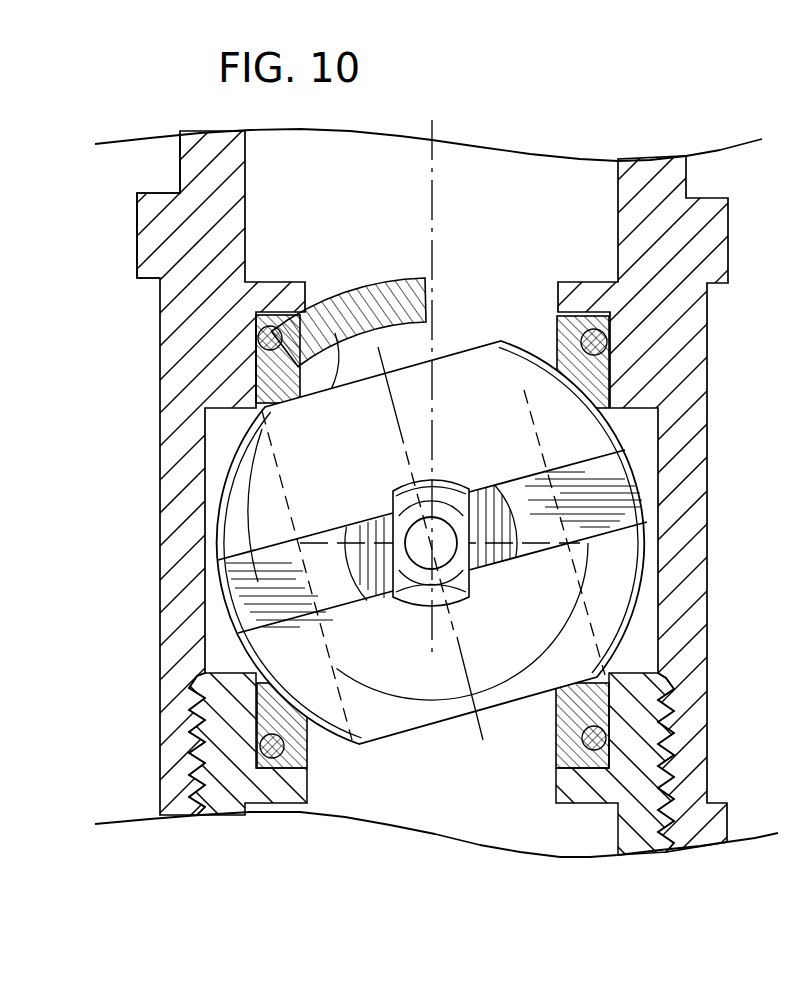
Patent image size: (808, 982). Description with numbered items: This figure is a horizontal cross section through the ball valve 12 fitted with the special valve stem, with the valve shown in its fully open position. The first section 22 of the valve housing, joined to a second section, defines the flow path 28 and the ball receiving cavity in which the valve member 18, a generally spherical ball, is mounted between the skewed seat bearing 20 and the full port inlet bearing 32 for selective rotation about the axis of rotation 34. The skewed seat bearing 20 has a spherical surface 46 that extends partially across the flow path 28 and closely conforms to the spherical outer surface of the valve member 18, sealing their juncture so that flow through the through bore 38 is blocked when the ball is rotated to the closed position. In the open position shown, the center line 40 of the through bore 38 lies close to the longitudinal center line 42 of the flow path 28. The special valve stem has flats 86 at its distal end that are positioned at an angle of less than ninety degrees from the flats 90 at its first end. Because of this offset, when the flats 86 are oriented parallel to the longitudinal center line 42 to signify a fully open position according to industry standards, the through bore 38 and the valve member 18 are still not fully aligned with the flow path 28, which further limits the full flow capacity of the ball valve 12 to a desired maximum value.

The ball valve 12 is at (162, 358).
The valve member 18 is at (242, 505).
The skewed seat bearing 20 is at (353, 300).
The first section 22 is at (188, 176).
The flow path 28 is at (455, 165).
The full port inlet bearing 32 is at (309, 748).
The axis of rotation 34 is at (452, 552).
The through bore 38 is at (600, 650).
The center line of the bore 40 is at (402, 418).
The longitudinal center line of the flow path 42 is at (432, 232).
The spherical surface 46 is at (250, 433).
The flats 86 is at (391, 500).
The flats 90 is at (362, 520).